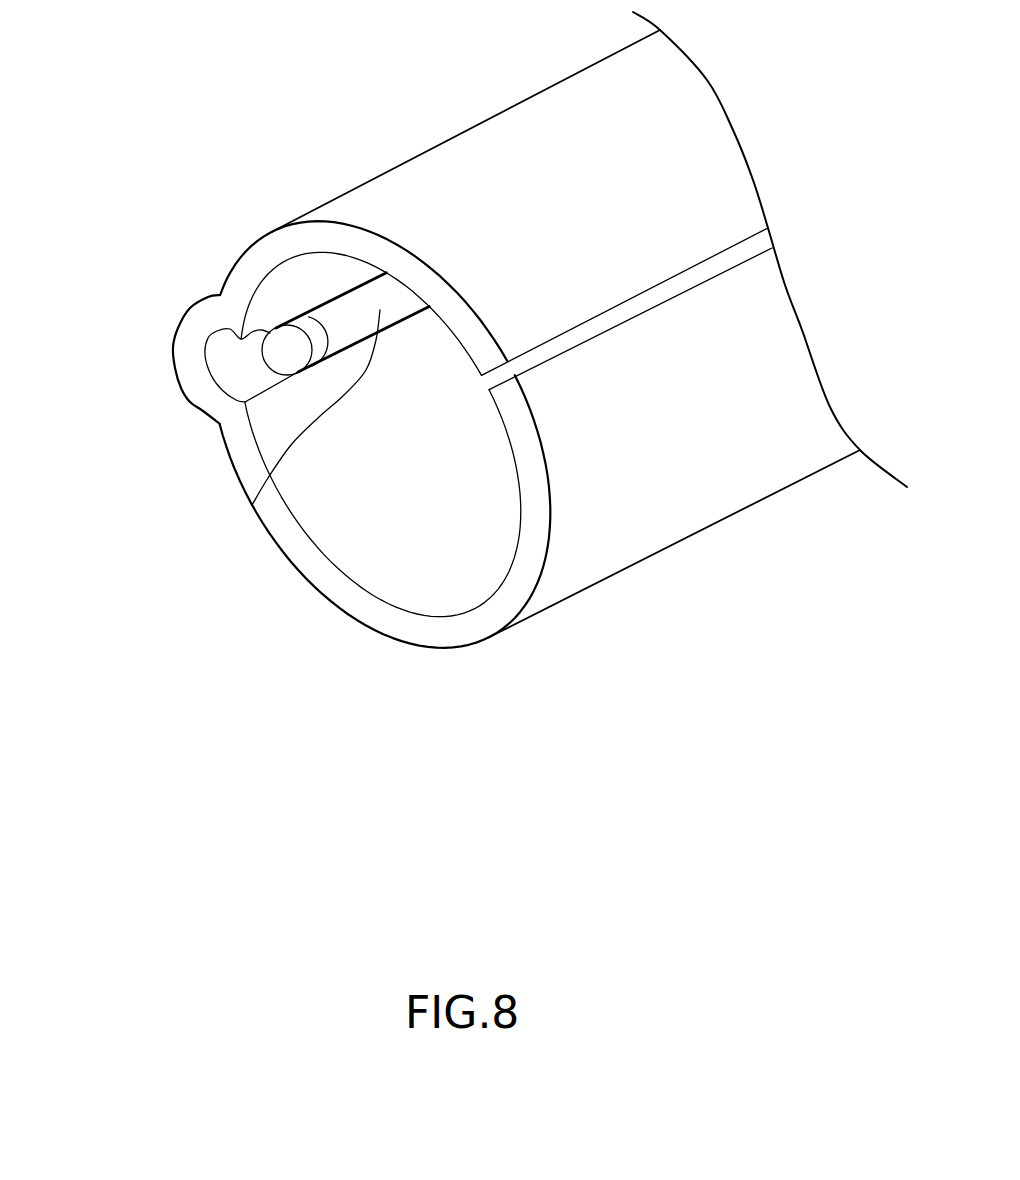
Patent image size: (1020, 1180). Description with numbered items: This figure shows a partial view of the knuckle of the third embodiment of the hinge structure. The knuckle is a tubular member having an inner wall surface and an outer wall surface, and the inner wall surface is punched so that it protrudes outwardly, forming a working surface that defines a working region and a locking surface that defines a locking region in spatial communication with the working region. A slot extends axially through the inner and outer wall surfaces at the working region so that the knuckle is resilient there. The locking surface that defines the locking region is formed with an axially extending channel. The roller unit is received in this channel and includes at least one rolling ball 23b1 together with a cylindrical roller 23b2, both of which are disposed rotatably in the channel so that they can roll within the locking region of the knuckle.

The rolling ball 23b1 is at (277, 352).
The cylindrical roller 23b2 is at (252, 505).